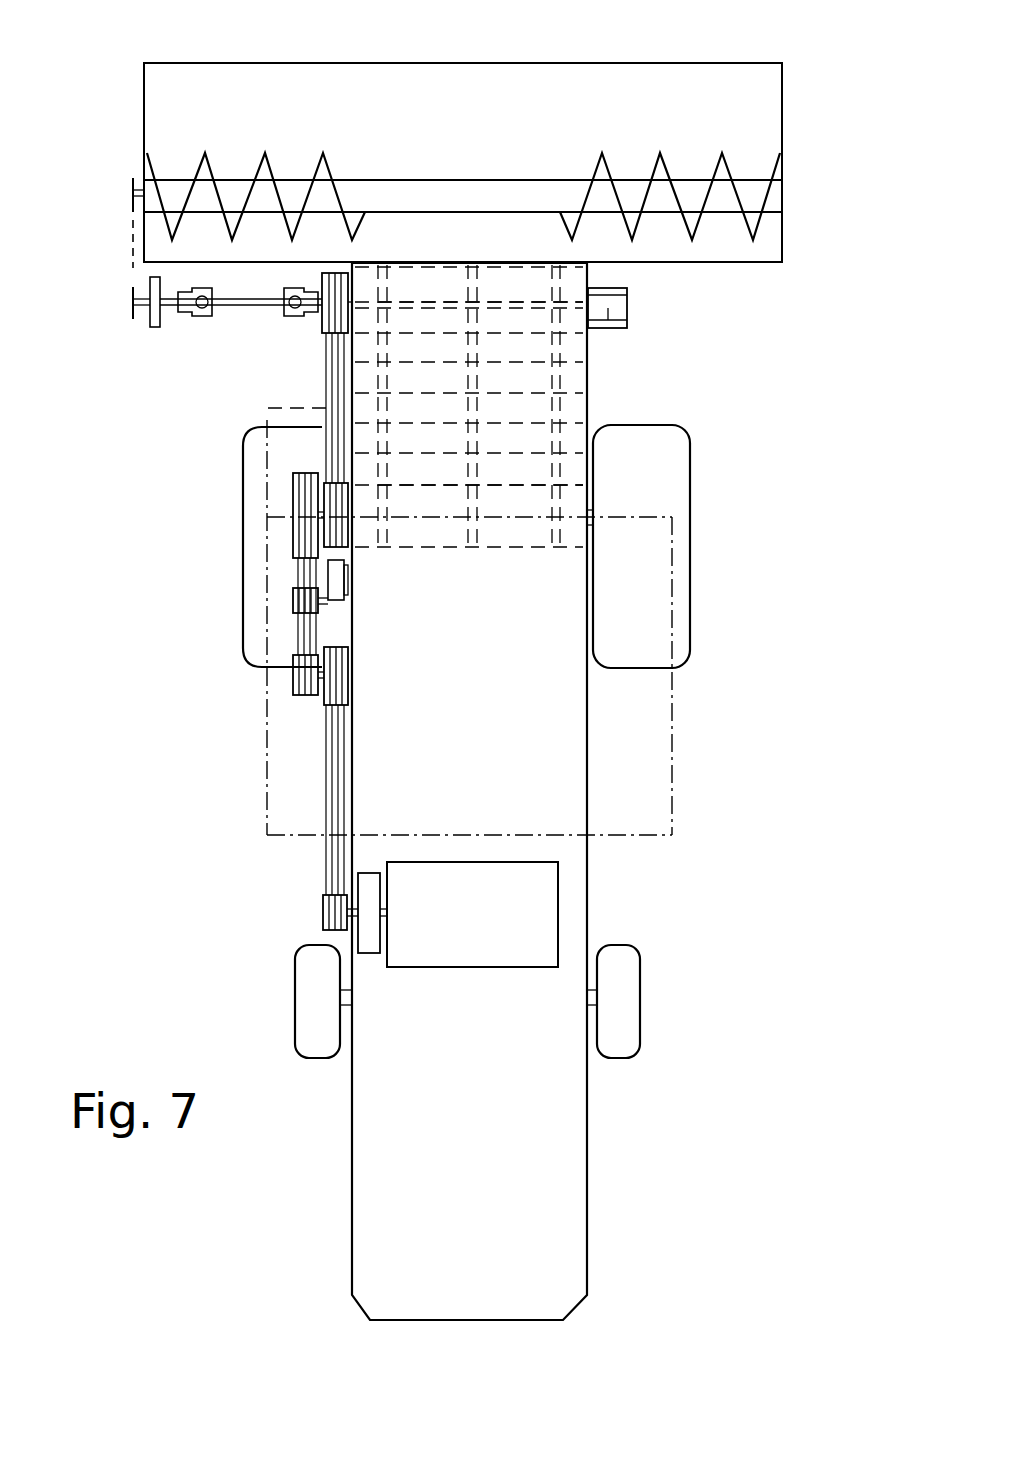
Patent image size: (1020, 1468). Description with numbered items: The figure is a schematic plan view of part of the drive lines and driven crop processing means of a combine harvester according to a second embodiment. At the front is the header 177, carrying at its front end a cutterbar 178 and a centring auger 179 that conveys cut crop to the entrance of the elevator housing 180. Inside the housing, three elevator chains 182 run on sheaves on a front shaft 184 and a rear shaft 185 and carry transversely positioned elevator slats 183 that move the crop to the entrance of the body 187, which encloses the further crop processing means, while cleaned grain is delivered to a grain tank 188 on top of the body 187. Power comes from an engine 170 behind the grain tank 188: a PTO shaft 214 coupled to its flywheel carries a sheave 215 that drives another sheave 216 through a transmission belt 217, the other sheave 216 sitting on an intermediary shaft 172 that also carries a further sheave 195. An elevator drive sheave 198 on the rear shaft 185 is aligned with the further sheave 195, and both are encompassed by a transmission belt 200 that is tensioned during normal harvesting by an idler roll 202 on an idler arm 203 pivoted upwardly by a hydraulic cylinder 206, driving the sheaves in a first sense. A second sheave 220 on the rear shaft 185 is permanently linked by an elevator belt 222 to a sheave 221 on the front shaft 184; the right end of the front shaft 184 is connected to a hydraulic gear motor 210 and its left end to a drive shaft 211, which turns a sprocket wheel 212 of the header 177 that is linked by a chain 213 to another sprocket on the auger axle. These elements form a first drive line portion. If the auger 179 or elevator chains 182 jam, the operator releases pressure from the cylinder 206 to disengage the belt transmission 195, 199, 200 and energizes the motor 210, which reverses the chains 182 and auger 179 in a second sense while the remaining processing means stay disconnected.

The engine 170 is at (452, 967).
The intermediary shaft 172 is at (348, 675).
The header 177 is at (144, 118).
The cutterbar 178 is at (211, 62).
The centring auger 179 is at (782, 180).
The elevator housing 180 is at (590, 375).
The elevator chains 182 is at (382, 447).
The elevator slats 183 is at (468, 390).
The front shaft 184 is at (413, 310).
The rear shaft 185 is at (480, 500).
The body 187 is at (590, 636).
The grain tank 188 is at (690, 560).
The further sheave 195 is at (293, 688).
The elevator drive sheave 198 is at (293, 490).
The belt transmission sheave 199 is at (293, 540).
The transmission belt 200 is at (300, 630).
The idler roll 202 is at (293, 598).
The idler arm 203 is at (350, 596).
The hydraulic cylinder 206 is at (350, 575).
The hydraulic gear motor 210 is at (610, 320).
The drive shaft 211 is at (240, 306).
The sprocket wheel 212 is at (133, 193).
The chain 213 is at (133, 268).
The PTO shaft 214 is at (380, 915).
The sheave 215 is at (325, 912).
The other sheave 216 is at (325, 705).
The transmission belt 217 is at (325, 860).
The second sheave 220 is at (330, 482).
The sheave 221 is at (322, 320).
The elevator belt 222 is at (322, 378).